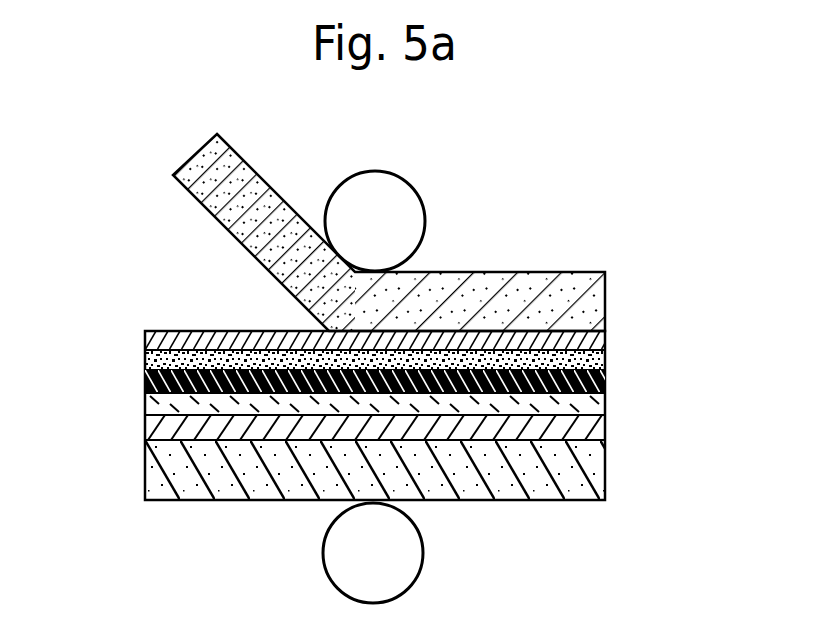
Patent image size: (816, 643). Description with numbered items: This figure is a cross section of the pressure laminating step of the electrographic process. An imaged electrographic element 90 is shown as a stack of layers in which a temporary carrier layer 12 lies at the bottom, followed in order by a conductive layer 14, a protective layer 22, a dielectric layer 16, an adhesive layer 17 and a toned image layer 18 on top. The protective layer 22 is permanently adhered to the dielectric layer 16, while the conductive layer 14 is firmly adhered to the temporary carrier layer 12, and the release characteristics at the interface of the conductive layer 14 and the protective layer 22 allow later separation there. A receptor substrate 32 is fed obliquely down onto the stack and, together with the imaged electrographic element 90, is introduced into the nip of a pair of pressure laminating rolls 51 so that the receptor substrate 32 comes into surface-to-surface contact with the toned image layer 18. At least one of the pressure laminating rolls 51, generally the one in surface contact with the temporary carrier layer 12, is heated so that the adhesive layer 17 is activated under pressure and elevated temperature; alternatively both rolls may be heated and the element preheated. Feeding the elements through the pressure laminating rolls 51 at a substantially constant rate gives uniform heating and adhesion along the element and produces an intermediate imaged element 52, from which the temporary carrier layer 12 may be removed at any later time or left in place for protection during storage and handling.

The temporary carrier layer 12 is at (366, 427).
The conductive layer 14 is at (607, 442).
The dielectric layer 16 is at (606, 380).
The adhesive layer 17 is at (146, 358).
The toned image layer 18 is at (146, 341).
The protective layer 22 is at (146, 395).
The receptor substrate 32 is at (208, 210).
The pressure laminating rolls 51 is at (424, 232).
The intermediate imaged element 52 is at (620, 402).
The imaged electrographic element 90 is at (134, 439).